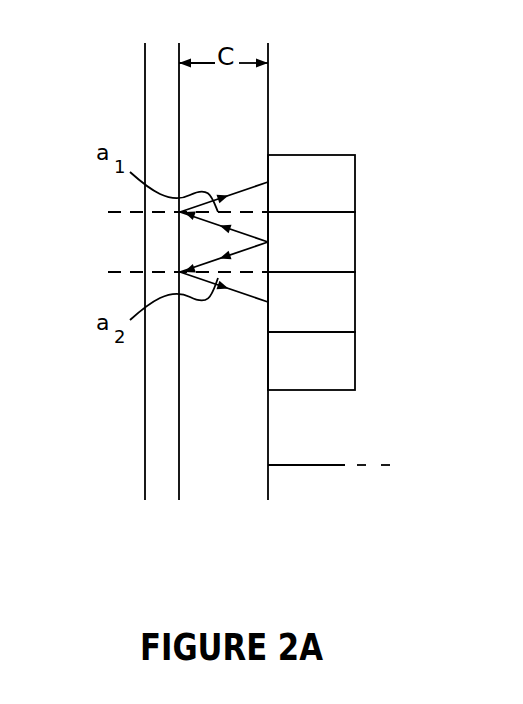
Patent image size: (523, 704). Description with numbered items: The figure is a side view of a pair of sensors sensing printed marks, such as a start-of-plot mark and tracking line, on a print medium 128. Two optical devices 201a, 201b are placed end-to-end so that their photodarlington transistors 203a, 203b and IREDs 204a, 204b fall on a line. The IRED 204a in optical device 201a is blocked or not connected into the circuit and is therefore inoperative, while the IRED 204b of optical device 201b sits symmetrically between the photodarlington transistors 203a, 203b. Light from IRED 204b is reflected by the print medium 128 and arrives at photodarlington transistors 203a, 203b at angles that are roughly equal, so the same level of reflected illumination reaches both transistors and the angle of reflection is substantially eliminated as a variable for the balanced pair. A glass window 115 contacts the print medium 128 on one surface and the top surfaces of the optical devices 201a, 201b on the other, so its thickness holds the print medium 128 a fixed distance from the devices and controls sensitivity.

The print medium 128 is at (163, 473).
The glass window 115 is at (268, 506).
The optical device 201a is at (370, 358).
The optical device 201b is at (370, 190).
The photodarlington transistor 203a is at (342, 298).
The photodarlington transistor 203b is at (306, 156).
The IRED 204a is at (336, 388).
The IRED 204b is at (370, 242).